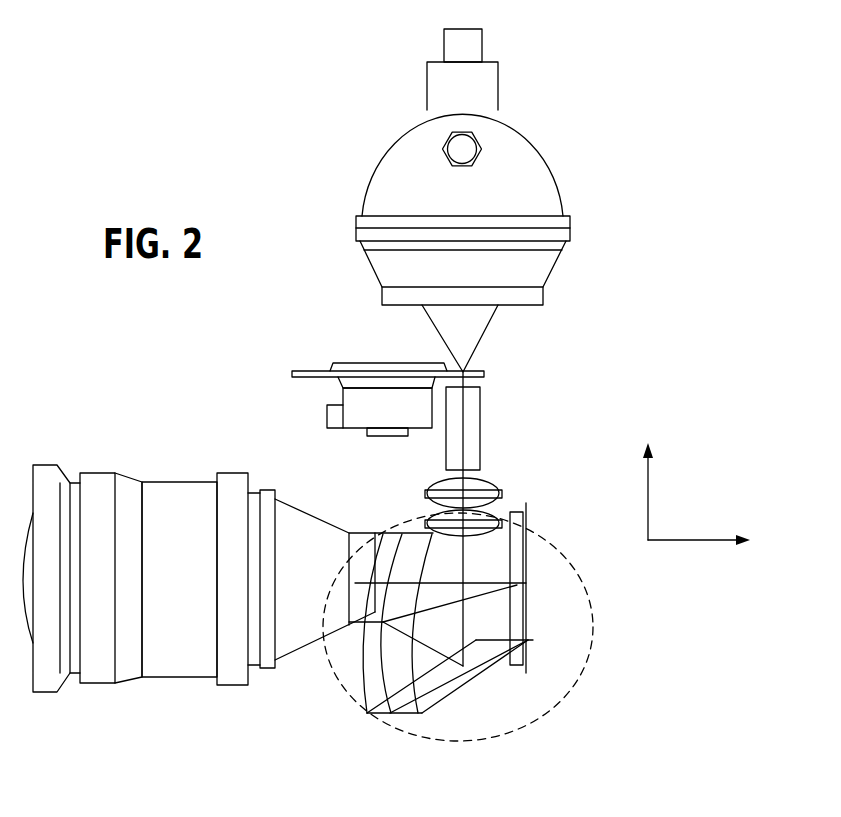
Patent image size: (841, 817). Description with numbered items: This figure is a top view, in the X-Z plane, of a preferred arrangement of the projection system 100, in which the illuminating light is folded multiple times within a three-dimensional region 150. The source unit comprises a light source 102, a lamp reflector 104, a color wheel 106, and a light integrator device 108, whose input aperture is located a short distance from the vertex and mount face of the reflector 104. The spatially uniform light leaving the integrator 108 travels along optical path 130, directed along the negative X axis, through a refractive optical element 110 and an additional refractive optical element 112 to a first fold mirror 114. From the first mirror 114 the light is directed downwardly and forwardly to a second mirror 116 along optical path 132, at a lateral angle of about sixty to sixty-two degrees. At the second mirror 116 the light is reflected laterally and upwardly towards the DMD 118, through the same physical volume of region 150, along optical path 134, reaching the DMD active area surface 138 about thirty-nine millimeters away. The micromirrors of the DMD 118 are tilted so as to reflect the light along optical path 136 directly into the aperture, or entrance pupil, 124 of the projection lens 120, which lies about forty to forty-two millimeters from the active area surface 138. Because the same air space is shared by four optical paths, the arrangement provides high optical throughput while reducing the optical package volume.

The projection system 100 is at (650, 318).
The light source 102 is at (445, 137).
The lamp reflector 104 is at (362, 216).
The color wheel 106 is at (298, 371).
The light integrator device 108 is at (481, 420).
The refractive optical element 110 is at (426, 493).
The optical path 130 is at (502, 491).
The additional refractive optical element 112 is at (512, 511).
The DMD 118 is at (517, 645).
The aperture of the projection lens 124 is at (356, 532).
The second mirror 116 is at (358, 657).
The optical path 132 is at (425, 645).
The optical path 136 is at (492, 583).
The optical path 134 is at (497, 604).
The DMD active area surface 138 is at (505, 638).
The first fold mirror 114 is at (438, 703).
The three-dimensional region 150 is at (598, 607).
The projection lens 120 is at (127, 684).